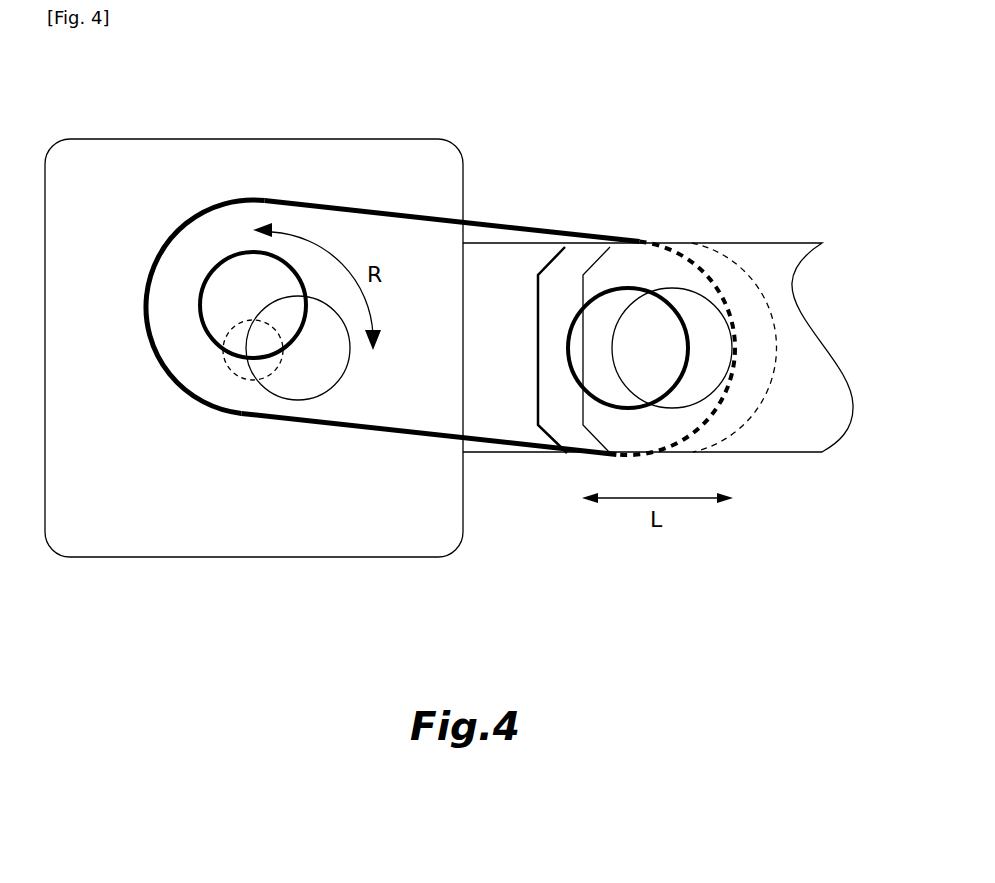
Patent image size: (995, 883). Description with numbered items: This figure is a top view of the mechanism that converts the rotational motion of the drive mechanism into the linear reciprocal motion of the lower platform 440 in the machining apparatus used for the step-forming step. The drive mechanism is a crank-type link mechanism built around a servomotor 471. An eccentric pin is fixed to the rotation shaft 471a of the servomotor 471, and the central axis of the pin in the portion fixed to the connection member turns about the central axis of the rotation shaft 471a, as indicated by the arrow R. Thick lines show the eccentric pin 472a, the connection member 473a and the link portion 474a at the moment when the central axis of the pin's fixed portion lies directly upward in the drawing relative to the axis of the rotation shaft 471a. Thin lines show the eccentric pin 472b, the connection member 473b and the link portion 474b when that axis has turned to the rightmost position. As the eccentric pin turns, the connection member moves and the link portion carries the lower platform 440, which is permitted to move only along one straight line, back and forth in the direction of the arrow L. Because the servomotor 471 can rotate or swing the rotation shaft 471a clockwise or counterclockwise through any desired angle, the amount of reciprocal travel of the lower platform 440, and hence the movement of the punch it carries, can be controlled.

The lower platform 440 is at (797, 437).
The servomotor 471 is at (240, 530).
The rotation shaft 471a is at (238, 376).
The eccentric pin 472a is at (225, 256).
The eccentric pin 472b is at (338, 383).
The connection member 473a is at (495, 225).
The connection member 473b is at (494, 452).
The link portion 474a is at (621, 288).
The link portion 474b is at (707, 292).